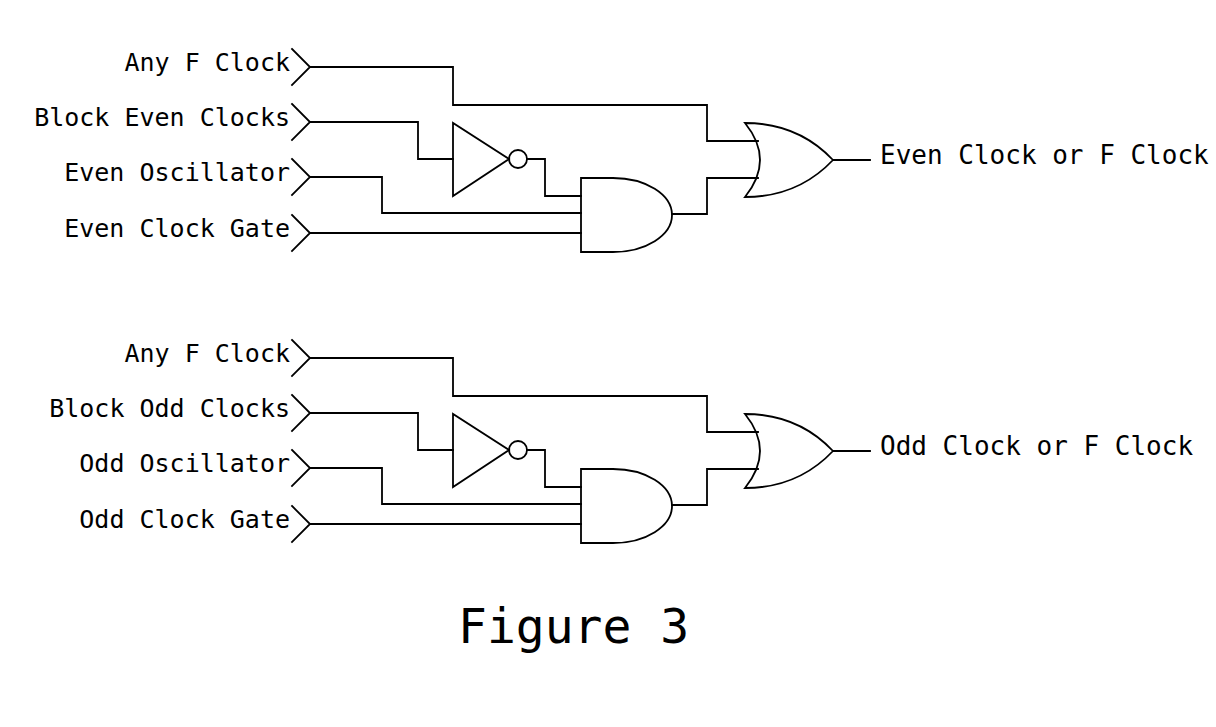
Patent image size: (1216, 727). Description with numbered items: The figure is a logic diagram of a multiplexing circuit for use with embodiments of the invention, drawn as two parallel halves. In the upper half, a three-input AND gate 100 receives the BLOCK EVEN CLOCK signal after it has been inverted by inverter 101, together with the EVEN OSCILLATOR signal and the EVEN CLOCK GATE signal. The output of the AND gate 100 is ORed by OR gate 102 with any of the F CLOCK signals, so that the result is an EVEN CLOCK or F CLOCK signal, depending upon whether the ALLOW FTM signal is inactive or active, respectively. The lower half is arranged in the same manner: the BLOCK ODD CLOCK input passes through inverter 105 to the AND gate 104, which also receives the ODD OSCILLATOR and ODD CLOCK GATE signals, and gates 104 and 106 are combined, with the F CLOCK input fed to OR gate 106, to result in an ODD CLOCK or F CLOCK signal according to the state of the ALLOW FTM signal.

The three-input AND gate 100 is at (640, 227).
The inverter 101 is at (490, 173).
The OR gate 102 is at (815, 175).
The gate 104 is at (626, 506).
The odd block inverter 105 is at (490, 450).
The gate 106 is at (789, 451).